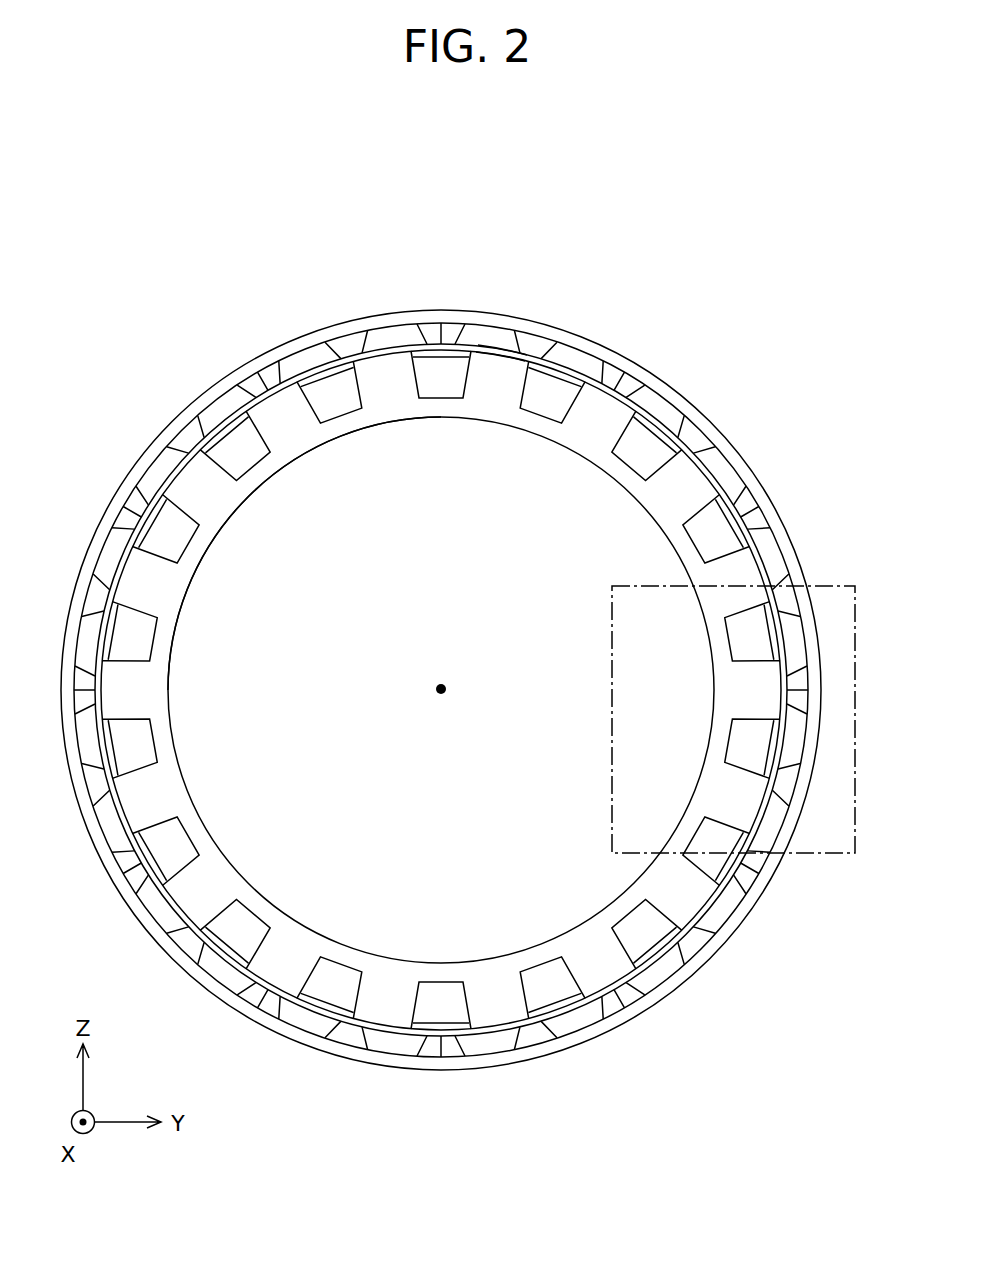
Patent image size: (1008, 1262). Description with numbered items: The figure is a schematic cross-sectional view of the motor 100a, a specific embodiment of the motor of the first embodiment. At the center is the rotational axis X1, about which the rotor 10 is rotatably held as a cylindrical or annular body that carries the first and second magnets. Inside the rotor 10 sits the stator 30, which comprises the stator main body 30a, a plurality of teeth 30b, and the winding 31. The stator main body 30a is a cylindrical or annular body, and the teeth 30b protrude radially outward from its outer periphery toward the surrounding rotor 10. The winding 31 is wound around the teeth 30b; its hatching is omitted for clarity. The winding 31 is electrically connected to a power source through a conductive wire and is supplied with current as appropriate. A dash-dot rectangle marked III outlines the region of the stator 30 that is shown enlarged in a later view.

The motor 100a is at (800, 169).
The rotor 10 is at (719, 269).
The stator 30 is at (188, 548).
The stator main body 30a is at (258, 477).
The teeth 30b is at (498, 364).
The winding 31 is at (447, 366).
The rotational axis X1 is at (422, 690).
The section line for FIG. 3 III is at (848, 585).